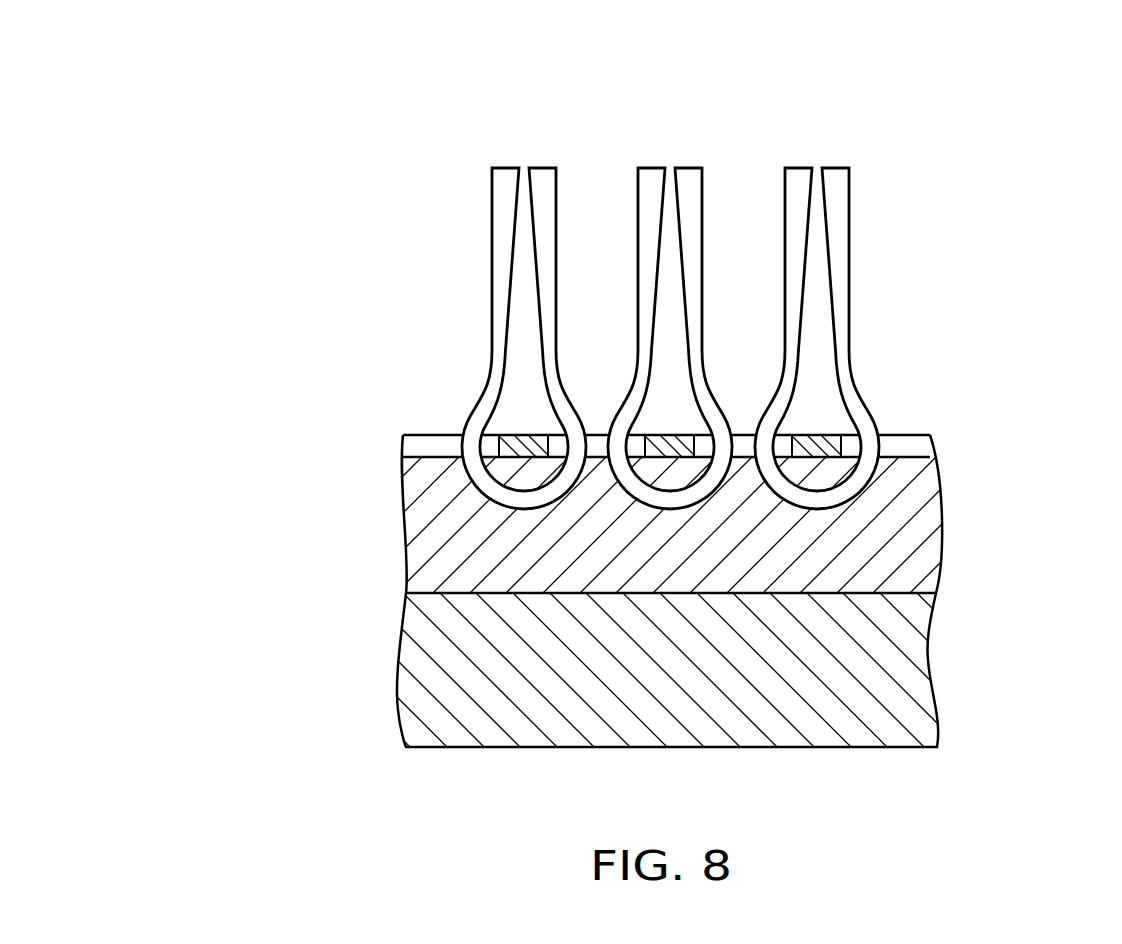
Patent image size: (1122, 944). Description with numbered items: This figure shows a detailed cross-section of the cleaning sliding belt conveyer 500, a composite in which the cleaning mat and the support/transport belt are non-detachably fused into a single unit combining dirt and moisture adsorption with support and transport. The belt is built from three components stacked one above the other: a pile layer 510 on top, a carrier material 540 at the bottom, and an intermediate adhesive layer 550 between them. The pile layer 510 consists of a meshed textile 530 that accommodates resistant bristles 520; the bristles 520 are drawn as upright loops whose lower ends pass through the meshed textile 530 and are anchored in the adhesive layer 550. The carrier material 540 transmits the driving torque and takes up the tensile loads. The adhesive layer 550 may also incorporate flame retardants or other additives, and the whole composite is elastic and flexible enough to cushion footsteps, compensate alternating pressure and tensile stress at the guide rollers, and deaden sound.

The cleaning sliding belt conveyer 500 is at (270, 146).
The pile layer 510 is at (767, 284).
The bristles 520 is at (545, 170).
The meshed textile 530 is at (744, 443).
The carrier material 540 is at (912, 693).
The adhesive layer 550 is at (915, 535).